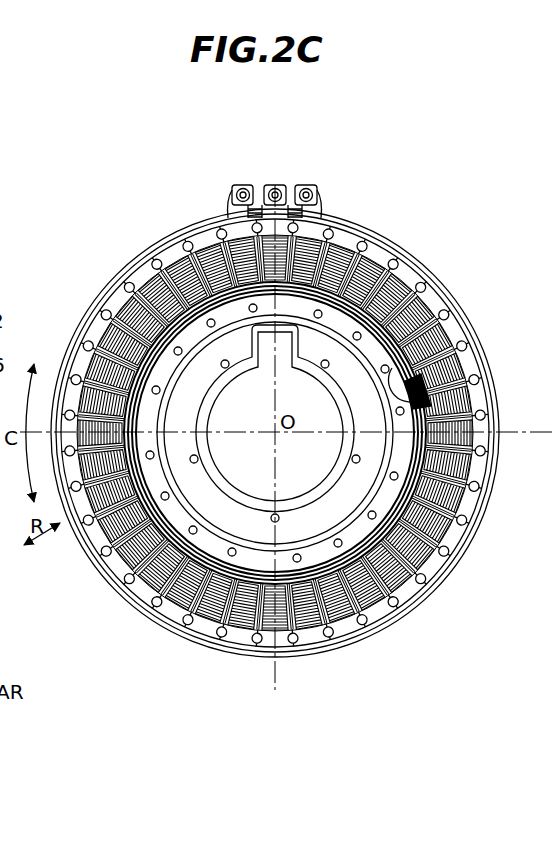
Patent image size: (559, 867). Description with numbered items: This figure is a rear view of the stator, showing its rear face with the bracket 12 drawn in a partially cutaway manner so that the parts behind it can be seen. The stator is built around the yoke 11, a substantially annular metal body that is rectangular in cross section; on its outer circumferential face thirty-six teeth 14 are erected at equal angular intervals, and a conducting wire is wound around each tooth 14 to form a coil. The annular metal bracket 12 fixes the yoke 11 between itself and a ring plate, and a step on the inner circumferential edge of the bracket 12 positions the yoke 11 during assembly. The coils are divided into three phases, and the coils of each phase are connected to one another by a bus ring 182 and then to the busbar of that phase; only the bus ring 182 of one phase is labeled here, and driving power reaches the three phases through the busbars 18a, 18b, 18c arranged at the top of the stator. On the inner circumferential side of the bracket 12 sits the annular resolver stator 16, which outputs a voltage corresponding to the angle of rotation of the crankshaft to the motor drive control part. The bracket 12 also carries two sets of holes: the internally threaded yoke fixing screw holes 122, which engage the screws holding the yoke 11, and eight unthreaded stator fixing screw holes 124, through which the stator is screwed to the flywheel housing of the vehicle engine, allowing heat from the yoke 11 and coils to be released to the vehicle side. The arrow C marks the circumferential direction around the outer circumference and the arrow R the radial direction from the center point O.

The yoke 11 is at (387, 368).
The bracket 12 is at (383, 492).
The teeth 14 is at (423, 381).
The resolver stator 16 is at (350, 640).
The busbar 18a is at (311, 184).
The busbar 18b is at (275, 184).
The busbar 18c is at (236, 184).
The yoke fixing screw holes 122 is at (76, 377).
The stator fixing screw holes 124 is at (178, 270).
The bus ring 182 is at (108, 286).